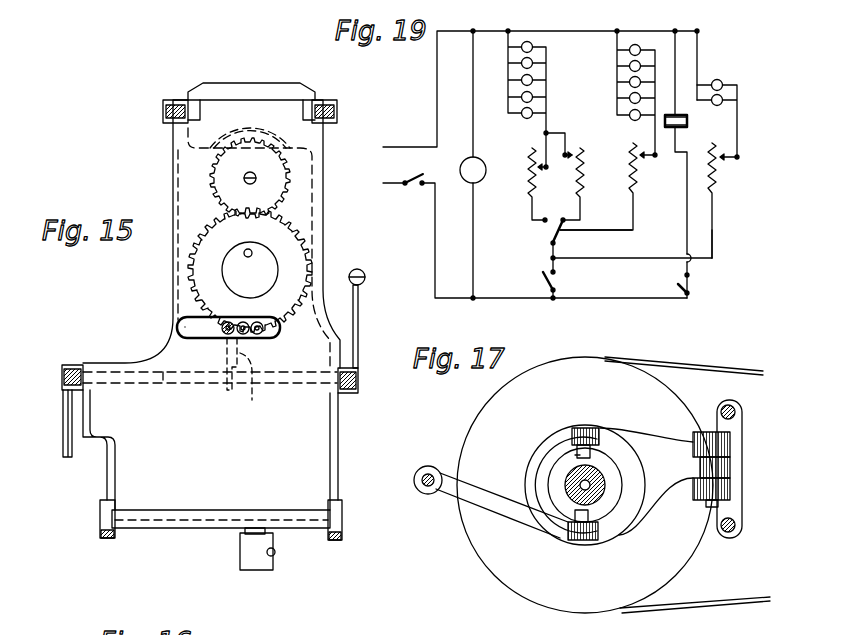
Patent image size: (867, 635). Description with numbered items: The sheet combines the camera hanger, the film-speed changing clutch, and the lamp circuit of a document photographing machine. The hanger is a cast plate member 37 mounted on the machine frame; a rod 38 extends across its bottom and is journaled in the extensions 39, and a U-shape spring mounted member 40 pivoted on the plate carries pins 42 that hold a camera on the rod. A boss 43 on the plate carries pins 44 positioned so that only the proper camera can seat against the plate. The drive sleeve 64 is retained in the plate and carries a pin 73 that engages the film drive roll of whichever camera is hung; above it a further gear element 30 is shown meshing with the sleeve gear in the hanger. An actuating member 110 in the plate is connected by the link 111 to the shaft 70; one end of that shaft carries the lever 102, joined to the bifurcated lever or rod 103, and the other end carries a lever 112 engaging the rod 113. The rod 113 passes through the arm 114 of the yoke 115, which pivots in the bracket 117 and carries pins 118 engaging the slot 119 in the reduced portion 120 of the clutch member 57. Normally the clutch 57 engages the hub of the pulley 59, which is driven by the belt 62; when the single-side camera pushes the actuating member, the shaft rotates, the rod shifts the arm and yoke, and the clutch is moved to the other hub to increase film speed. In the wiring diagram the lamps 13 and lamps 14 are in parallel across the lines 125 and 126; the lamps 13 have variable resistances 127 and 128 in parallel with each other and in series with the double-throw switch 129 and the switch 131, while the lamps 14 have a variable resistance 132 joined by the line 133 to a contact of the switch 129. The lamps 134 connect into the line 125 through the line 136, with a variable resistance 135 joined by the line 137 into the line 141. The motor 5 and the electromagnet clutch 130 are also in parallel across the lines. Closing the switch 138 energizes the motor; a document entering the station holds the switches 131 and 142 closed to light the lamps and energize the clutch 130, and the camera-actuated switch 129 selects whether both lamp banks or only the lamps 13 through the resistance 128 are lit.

In FIG. 19, the motor 5 is at (478, 158).
In FIG. 19, the lamps 13 is at (533, 80).
In FIG. 19, the lamps 14 is at (629, 96).
In FIG. 15, the drive gear 30 is at (256, 184).
In FIG. 15, the cast plate member 37 is at (333, 422).
In FIG. 15, the rod 38 is at (168, 511).
In FIG. 15, the extensions 39 is at (342, 536).
In FIG. 15, the U-shape spring mounted member 40 is at (250, 92).
In FIG. 15, the pins 42 is at (183, 112).
In FIG. 15, the boss 43 is at (277, 336).
In FIG. 15, the pins 44 is at (250, 325).
In FIG. 17, the clutch member 57 is at (580, 430).
In FIG. 17, the pulley 59 is at (668, 396).
In FIG. 17, the belt 62 is at (700, 602).
In FIG. 15, the drive sleeve 64 is at (226, 258).
In FIG. 15, the shaft 70 is at (162, 385).
In FIG. 15, the pin 73 is at (249, 250).
In FIG. 15, the lever 102 is at (72, 365).
In FIG. 15, the lever or rod 103 is at (62, 406).
In FIG. 15, the actuating member 110 is at (226, 333).
In FIG. 15, the link 111 is at (254, 385).
In FIG. 15, the lever 112 is at (358, 327).
In FIG. 15, the rod 113 is at (365, 278).
In FIG. 17, the rod 113 is at (426, 494).
In FIG. 17, the arm 114 is at (505, 500).
In FIG. 17, the yoke 115 is at (652, 500).
In FIG. 17, the bracket 117 is at (742, 420).
In FIG. 17, the pins 118 is at (575, 455).
In FIG. 17, the slot 119 is at (607, 500).
In FIG. 17, the reduced portion 120 is at (572, 538).
In FIG. 19, the line 125 is at (592, 31).
In FIG. 19, the line 126 is at (612, 298).
In FIG. 19, the variable resistance 127 is at (584, 170).
In FIG. 19, the variable resistance 128 is at (525, 186).
In FIG. 15, the double-throw switch 129 is at (265, 572).
In FIG. 19, the double-throw switch 129 is at (552, 228).
In FIG. 19, the electromagnet clutch 130 is at (688, 121).
In FIG. 19, the switch 131 is at (558, 278).
In FIG. 19, the variable resistance 132 is at (640, 185).
In FIG. 19, the line 133 is at (600, 228).
In FIG. 19, the lamps 134 is at (722, 78).
In FIG. 19, the variable resistance 135 is at (724, 172).
In FIG. 19, the line 136 is at (705, 45).
In FIG. 19, the line 137 is at (715, 247).
In FIG. 19, the switch 138 is at (410, 172).
In FIG. 19, the line 141 is at (548, 256).
In FIG. 19, the switch 142 is at (680, 286).